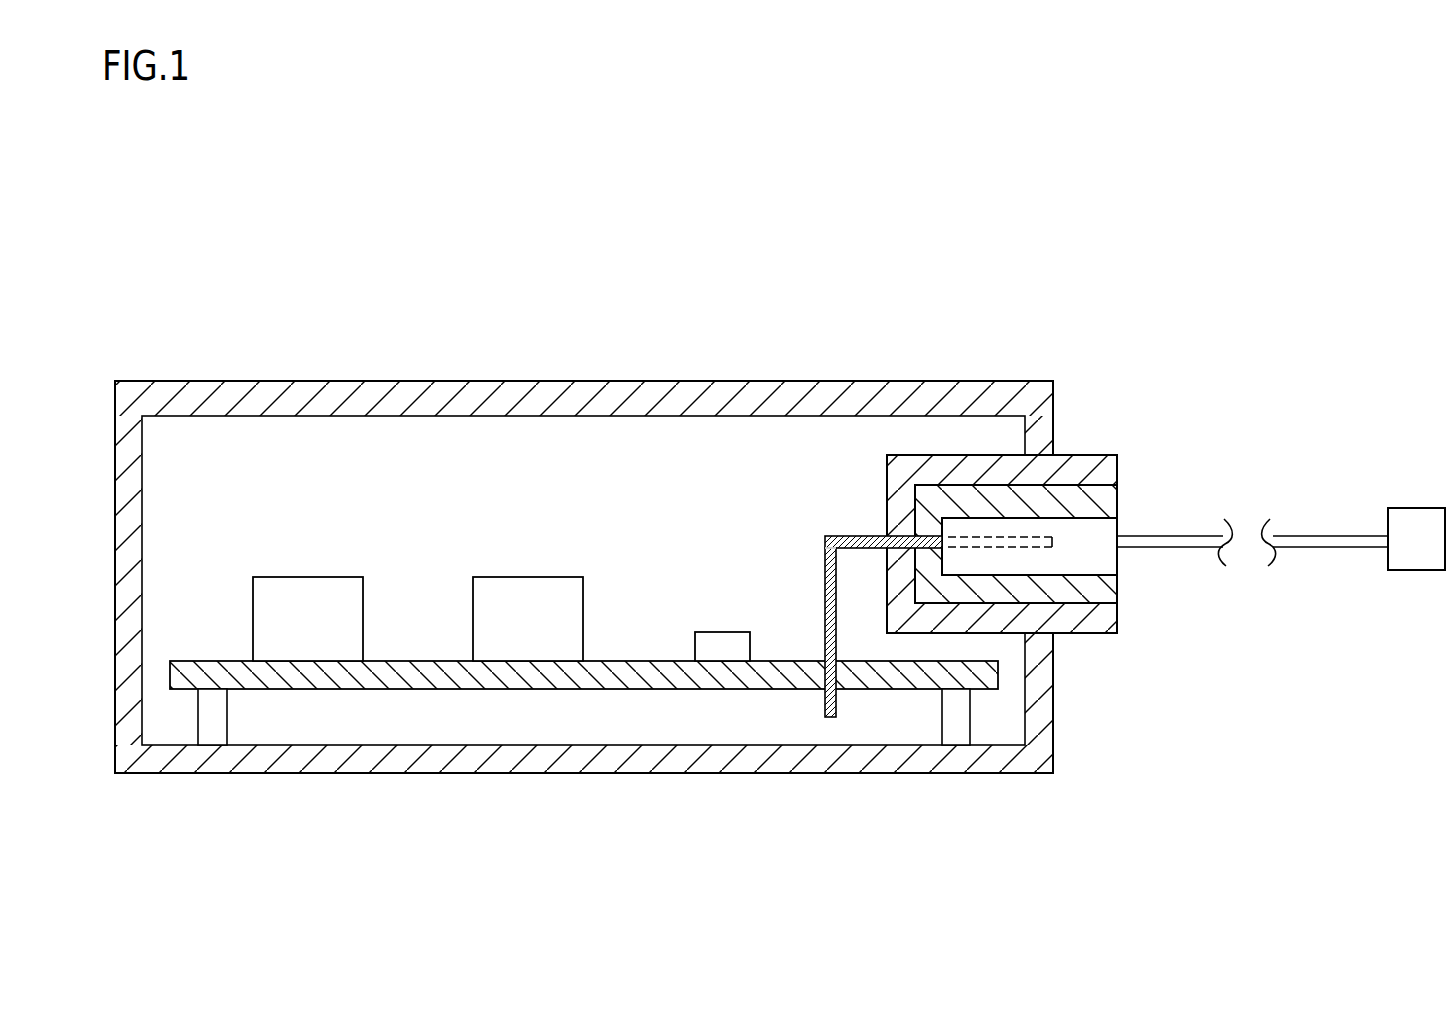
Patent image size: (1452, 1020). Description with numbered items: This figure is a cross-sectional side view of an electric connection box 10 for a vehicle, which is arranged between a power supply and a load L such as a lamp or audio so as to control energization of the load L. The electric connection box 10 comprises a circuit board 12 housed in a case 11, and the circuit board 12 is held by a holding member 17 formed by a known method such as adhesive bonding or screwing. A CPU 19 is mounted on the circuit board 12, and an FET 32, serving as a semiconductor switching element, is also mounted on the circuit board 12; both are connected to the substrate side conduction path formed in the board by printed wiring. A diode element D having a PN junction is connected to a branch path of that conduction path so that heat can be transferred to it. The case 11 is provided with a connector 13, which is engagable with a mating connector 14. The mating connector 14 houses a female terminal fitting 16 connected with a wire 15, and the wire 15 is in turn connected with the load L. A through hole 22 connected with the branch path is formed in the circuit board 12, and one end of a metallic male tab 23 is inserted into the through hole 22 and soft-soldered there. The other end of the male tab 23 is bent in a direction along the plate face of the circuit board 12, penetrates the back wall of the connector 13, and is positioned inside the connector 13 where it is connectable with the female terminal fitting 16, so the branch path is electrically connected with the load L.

The electric connection box 10 is at (467, 268).
The case 11 is at (663, 381).
The circuit board 12 is at (397, 676).
The connector 13 is at (1087, 455).
The mating connector 14 is at (1117, 503).
The wire 15 is at (1181, 540).
The female terminal fitting 16 is at (1090, 555).
The holding member 17 is at (212, 726).
The CPU 19 is at (309, 587).
The through hole 22 is at (825, 699).
The male tab 23 is at (858, 536).
The FET 32 is at (527, 592).
The diode element D is at (723, 637).
The load L is at (1417, 527).